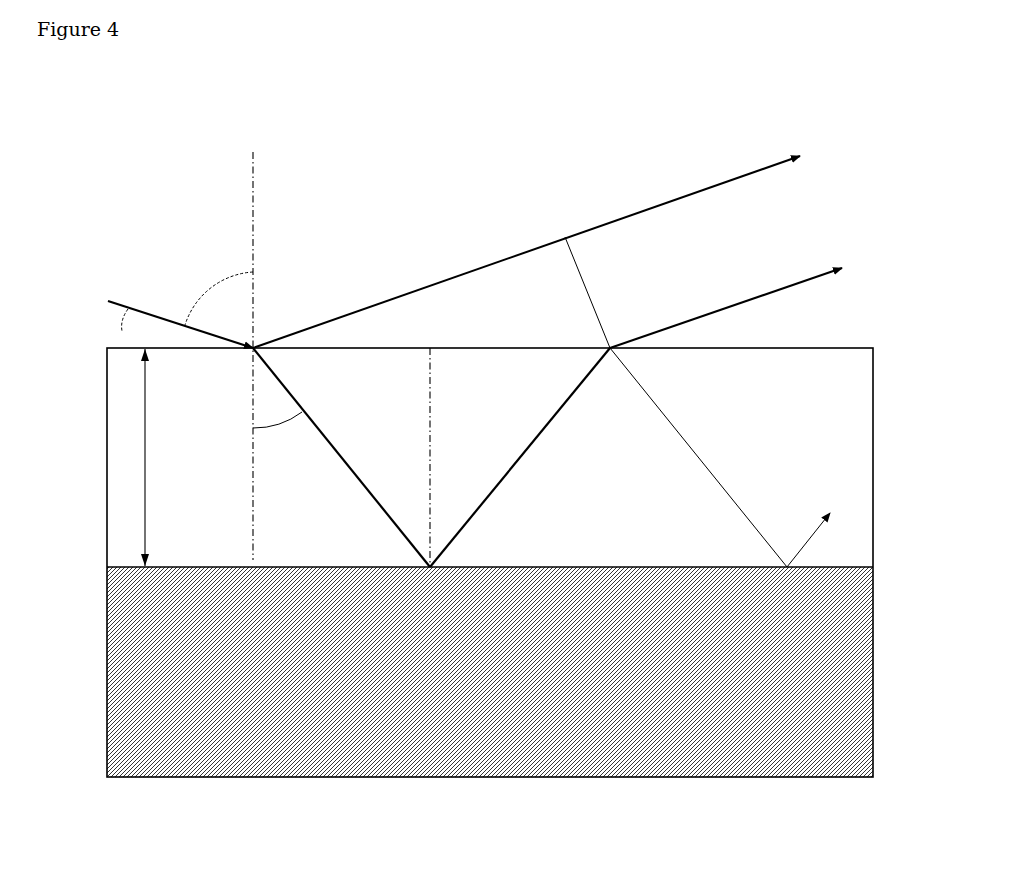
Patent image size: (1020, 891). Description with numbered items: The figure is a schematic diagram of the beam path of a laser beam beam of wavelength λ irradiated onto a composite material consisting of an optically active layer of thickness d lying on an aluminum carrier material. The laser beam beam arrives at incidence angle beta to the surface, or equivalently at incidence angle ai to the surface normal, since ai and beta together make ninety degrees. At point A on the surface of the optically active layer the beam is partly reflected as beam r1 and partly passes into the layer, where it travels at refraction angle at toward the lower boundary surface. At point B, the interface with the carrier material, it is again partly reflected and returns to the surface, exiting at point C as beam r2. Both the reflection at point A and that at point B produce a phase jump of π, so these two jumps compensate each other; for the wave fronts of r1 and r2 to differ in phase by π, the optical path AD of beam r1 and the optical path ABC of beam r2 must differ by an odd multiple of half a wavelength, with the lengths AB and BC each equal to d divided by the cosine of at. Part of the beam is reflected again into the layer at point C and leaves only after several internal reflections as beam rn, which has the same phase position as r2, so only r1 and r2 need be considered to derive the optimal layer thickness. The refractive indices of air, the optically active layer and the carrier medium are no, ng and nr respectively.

The point A is at (274, 299).
The point B is at (347, 474).
The point C is at (527, 440).
The point D is at (580, 276).
The reflected beam r1 is at (526, 252).
The reflected beam r2 is at (726, 308).
The internally reflected beam rn is at (720, 457).
The layer thickness d is at (133, 457).
The refractive index of air no is at (184, 188).
The refractive index of optically active layer ng is at (431, 496).
The refractive index of carrier medium nr is at (490, 562).
The incidence angle αi ai is at (219, 300).
The refraction angle αt at is at (277, 411).
The incidence angle β beta is at (132, 328).
The laser beam is at (159, 297).